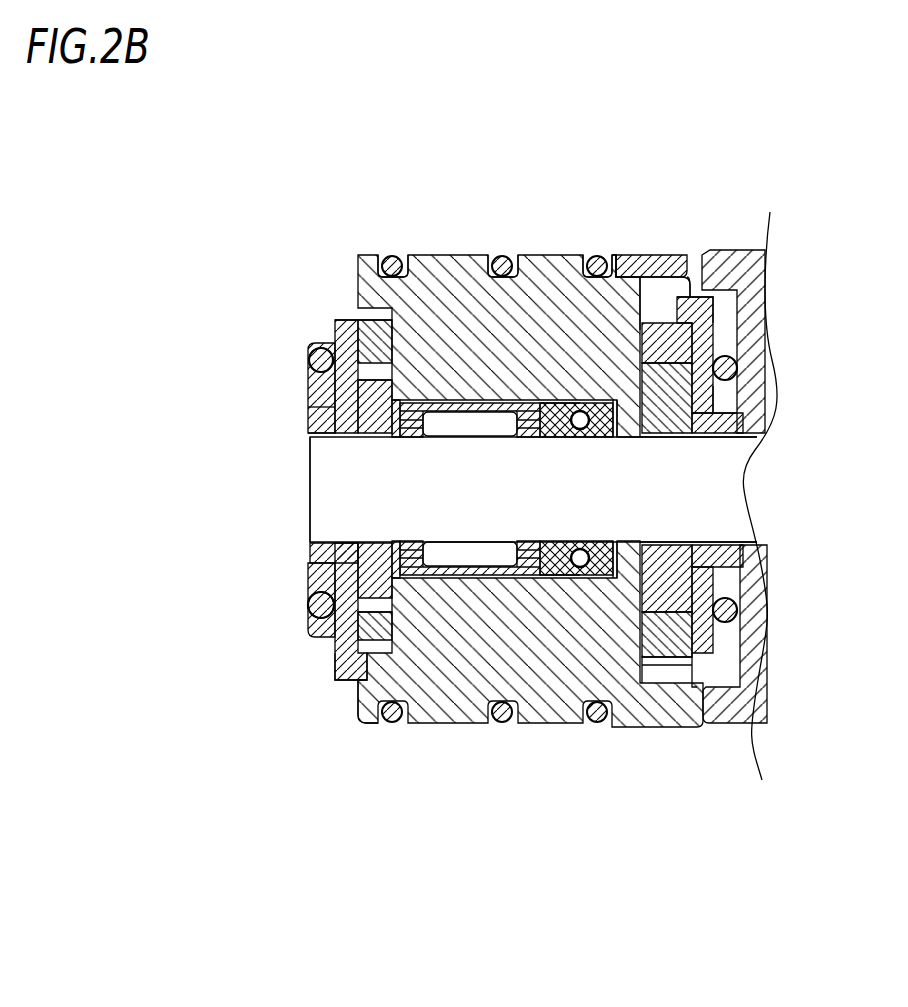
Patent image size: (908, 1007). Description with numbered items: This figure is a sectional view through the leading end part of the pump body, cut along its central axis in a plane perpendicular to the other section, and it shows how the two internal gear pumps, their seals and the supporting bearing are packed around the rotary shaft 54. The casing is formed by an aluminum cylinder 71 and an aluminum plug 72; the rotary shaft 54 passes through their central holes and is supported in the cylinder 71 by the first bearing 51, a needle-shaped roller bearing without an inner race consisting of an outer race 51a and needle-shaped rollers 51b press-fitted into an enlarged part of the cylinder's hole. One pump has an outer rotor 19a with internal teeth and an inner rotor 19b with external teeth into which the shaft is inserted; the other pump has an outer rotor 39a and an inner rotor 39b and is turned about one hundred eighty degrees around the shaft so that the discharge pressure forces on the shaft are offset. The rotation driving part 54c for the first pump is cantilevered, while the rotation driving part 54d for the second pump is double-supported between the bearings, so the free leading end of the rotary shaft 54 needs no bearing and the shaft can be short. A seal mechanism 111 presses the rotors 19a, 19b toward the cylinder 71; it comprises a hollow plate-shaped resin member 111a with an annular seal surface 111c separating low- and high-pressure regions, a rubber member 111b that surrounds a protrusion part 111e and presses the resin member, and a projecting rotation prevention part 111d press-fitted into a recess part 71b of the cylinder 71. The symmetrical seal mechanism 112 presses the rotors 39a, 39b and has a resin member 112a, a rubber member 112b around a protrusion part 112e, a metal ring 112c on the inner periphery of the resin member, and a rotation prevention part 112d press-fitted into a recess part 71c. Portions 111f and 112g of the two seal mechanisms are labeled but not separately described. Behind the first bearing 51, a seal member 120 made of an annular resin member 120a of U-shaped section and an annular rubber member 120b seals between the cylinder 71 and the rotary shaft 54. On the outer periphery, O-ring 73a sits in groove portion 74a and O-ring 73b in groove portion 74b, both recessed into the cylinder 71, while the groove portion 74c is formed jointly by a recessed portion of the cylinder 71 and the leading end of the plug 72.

The outer rotor 19a is at (325, 600).
The inner rotor 19b is at (335, 568).
The outer rotor 39a is at (672, 600).
The inner rotor 39b is at (668, 630).
The first bearing 51 is at (453, 810).
The outer race 51a is at (447, 575).
The needle-shaped roller 51b is at (470, 556).
The rotary shaft 54 is at (345, 484).
The rotation driving part 54c is at (370, 512).
The rotation driving part 54d is at (665, 491).
The cylinder 71 is at (466, 700).
The recess part 71b is at (358, 700).
The recess part 71c is at (645, 323).
The plug 72 is at (725, 252).
The O-ring 73a is at (386, 258).
The O-ring 73b is at (510, 257).
The groove portion 74a is at (405, 256).
The groove portion 74b is at (490, 256).
The groove portion 74c is at (608, 256).
The seal mechanism 111 is at (310, 398).
The resin member 111a is at (345, 316).
The rubber member 111b is at (308, 372).
The annular seal surface 111c is at (312, 343).
The rotation prevention part 111d is at (360, 684).
The protrusion part 111e is at (310, 413).
The seal holder inner face 111f is at (314, 436).
The seal mechanism 112 is at (736, 355).
The resin member 112a is at (742, 328).
The rubber member 112b is at (738, 314).
The metal ring 112c is at (735, 660).
The rotation prevention part 112d is at (694, 254).
The protrusion part 112e is at (737, 386).
The retainer groove 112g is at (736, 425).
The seal member 120 is at (640, 810).
The annular resin member 120a is at (600, 556).
The annular rubber member 120b is at (576, 560).